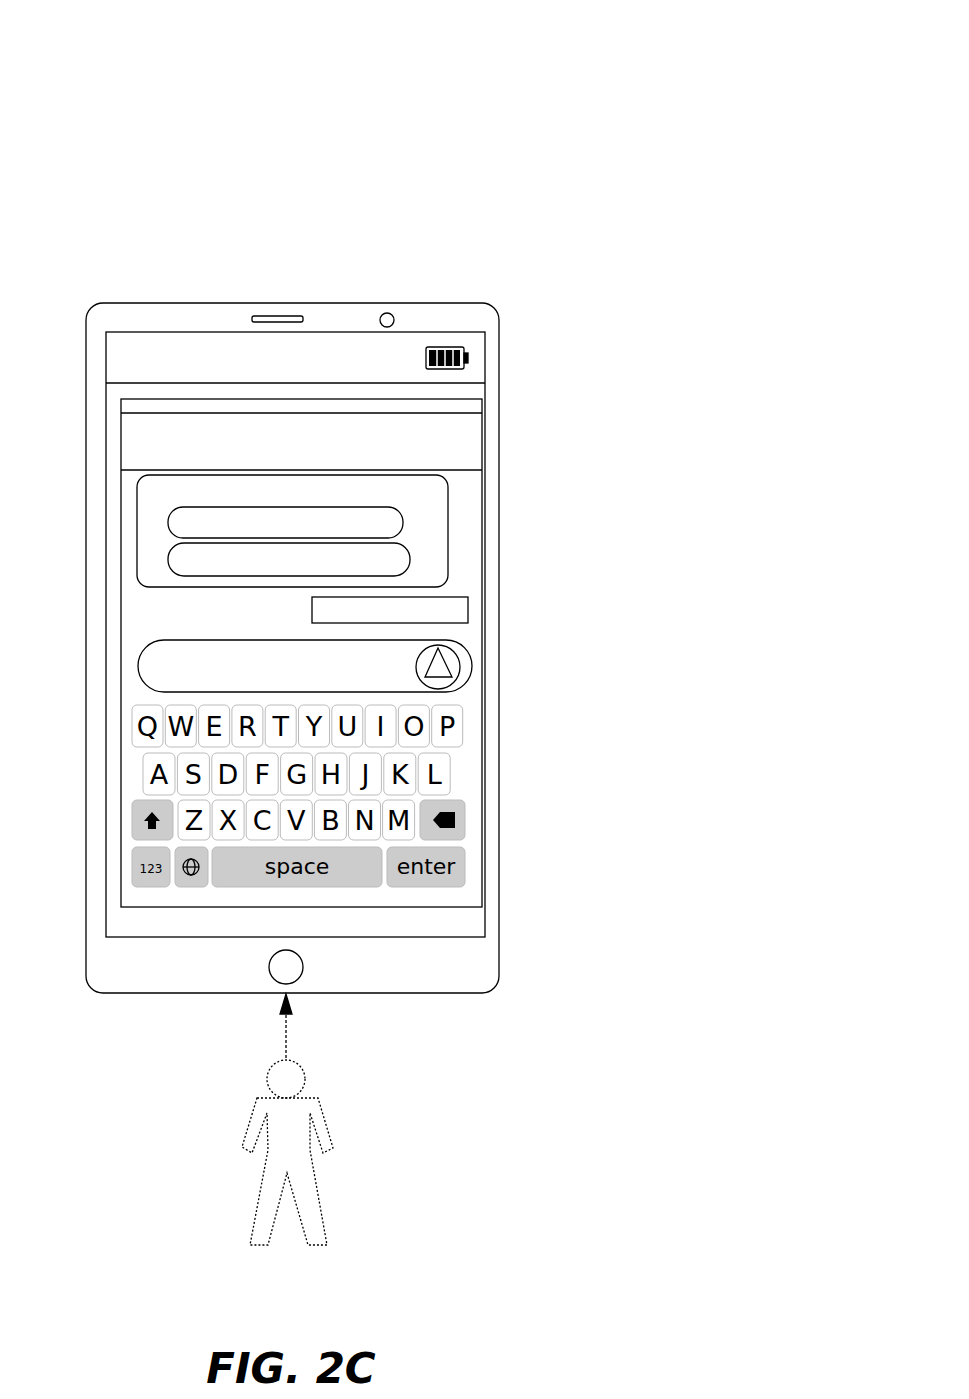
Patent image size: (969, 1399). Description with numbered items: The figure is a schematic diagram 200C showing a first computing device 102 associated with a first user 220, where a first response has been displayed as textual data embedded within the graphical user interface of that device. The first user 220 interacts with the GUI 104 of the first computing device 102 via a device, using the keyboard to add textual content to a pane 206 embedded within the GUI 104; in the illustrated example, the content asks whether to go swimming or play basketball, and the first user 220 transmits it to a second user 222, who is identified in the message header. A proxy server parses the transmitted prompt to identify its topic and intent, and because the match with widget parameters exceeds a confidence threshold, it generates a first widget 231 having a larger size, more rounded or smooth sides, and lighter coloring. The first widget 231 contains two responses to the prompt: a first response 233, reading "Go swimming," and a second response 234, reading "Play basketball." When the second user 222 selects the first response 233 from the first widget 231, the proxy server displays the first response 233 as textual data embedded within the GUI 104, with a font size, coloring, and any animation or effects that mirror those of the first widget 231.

The schematic diagram 200C is at (688, 46).
The first computing device 102 is at (112, 302).
The GUI 104 is at (425, 328).
The second user 222 is at (282, 456).
The first widget 231 is at (130, 528).
The first response 233 is at (485, 592).
The second response 234 is at (208, 571).
The pane 206 is at (130, 663).
The first user 220 is at (330, 1128).